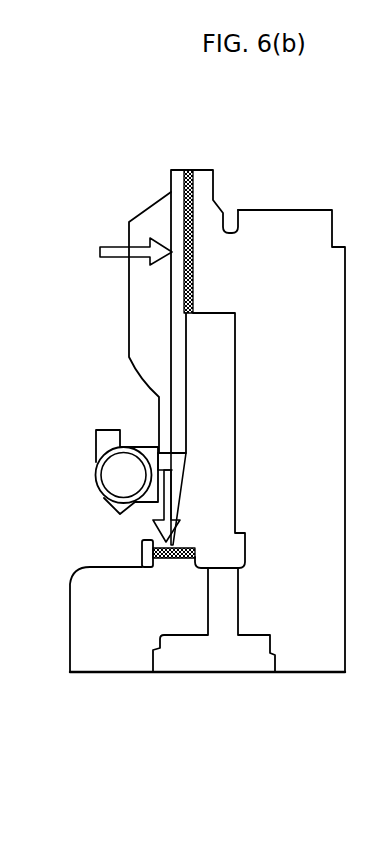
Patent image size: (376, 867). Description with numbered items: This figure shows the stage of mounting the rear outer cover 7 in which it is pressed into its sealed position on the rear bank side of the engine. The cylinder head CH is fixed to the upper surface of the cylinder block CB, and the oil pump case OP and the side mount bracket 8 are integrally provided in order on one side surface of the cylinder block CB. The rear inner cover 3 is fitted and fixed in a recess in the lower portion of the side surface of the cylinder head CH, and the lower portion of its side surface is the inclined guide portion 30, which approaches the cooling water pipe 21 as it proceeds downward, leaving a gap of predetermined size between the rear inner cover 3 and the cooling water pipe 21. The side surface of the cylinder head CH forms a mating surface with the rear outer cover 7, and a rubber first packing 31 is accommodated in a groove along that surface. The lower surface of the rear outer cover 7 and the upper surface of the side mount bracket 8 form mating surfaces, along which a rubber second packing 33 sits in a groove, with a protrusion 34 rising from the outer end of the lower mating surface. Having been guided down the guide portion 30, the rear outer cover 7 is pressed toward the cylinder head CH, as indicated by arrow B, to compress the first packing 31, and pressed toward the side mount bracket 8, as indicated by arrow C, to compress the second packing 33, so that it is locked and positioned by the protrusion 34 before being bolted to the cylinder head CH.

The rear inner cover 3 is at (225, 408).
The rear outer cover 7 is at (152, 216).
The side mount bracket 8 is at (96, 652).
The cooling water pipe 21 is at (95, 468).
The guide portion 30 is at (188, 481).
The first packing 31 is at (195, 183).
The second packing 33 is at (171, 558).
The protrusion 34 is at (142, 548).
The arrow B is at (125, 251).
The arrow C is at (158, 520).
The cylinder head CH is at (305, 220).
The cylinder block CB is at (307, 652).
The oil pump case OP is at (215, 657).